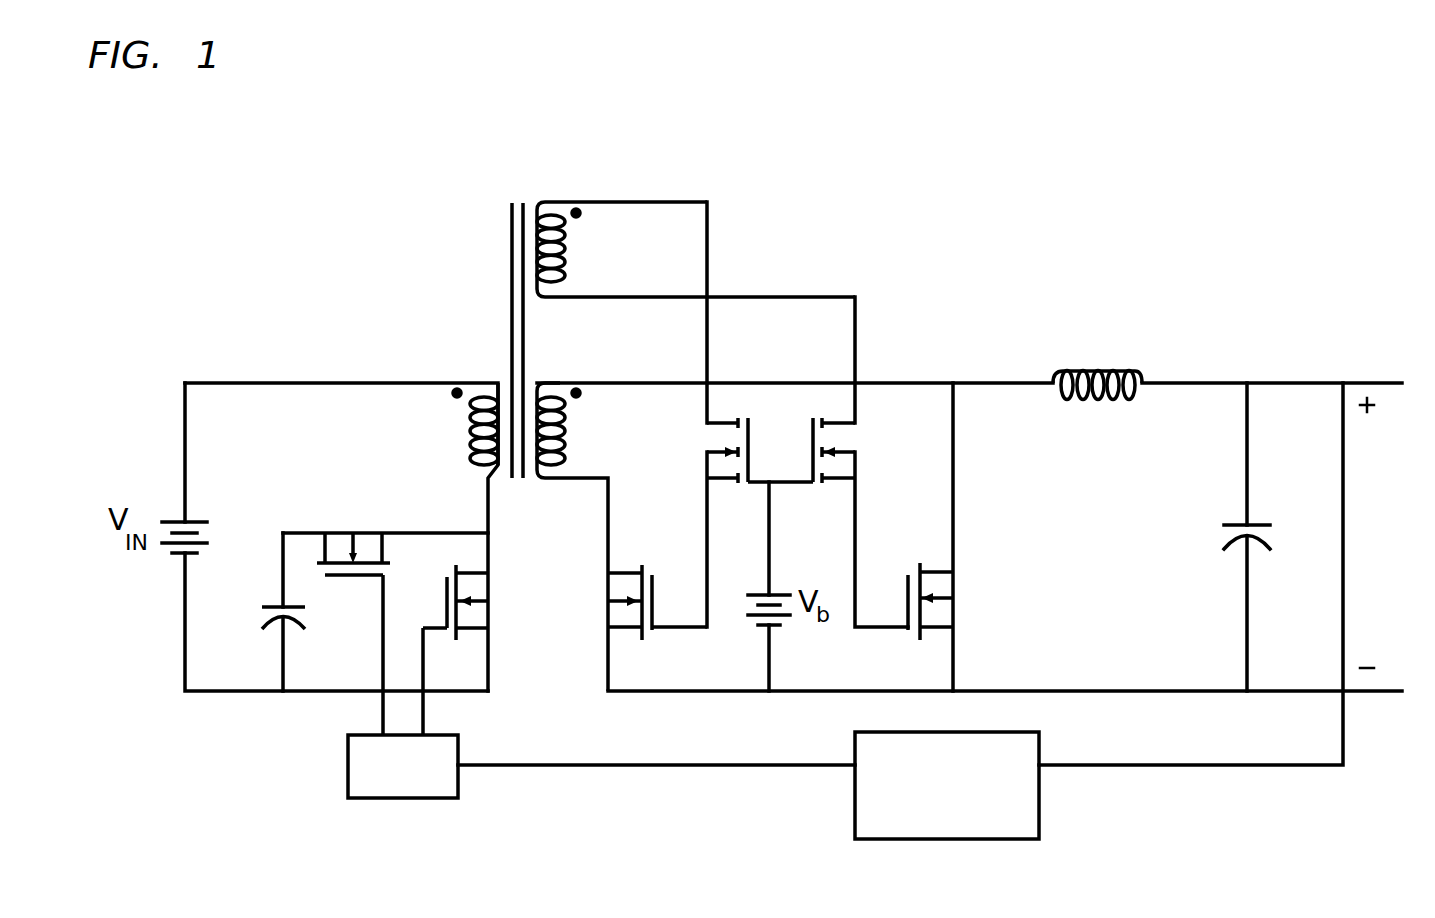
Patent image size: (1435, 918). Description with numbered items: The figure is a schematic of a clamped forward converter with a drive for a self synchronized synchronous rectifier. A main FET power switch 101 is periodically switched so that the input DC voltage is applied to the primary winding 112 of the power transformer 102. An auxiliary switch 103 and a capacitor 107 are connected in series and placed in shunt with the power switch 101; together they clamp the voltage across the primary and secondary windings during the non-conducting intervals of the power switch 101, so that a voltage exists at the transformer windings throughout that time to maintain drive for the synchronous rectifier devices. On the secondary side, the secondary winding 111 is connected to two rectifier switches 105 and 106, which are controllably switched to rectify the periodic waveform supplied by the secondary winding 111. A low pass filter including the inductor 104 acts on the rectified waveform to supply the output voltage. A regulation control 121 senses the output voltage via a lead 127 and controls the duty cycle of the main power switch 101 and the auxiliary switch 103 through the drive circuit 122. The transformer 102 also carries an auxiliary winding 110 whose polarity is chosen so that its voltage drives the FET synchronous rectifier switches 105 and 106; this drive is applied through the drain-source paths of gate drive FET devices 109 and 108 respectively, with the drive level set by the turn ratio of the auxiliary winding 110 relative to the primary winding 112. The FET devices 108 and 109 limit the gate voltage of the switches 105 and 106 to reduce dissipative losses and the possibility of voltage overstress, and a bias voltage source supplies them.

The main FET power switch 101 is at (488, 608).
The power transformer 102 is at (510, 207).
The auxiliary switch 103 is at (352, 533).
The inductor 104 is at (1133, 398).
The rectifier switch 105 is at (953, 617).
The rectifier switch 106 is at (608, 605).
The capacitor 107 is at (268, 607).
The gate drive FET device 108 is at (707, 470).
The gate drive FET device 109 is at (855, 465).
The auxiliary winding 110 is at (562, 252).
The secondary winding 111 is at (562, 398).
The primary winding 112 is at (470, 440).
The regulation control 121 is at (1000, 839).
The drive circuit 122 is at (420, 798).
The lead 127 is at (1391, 549).